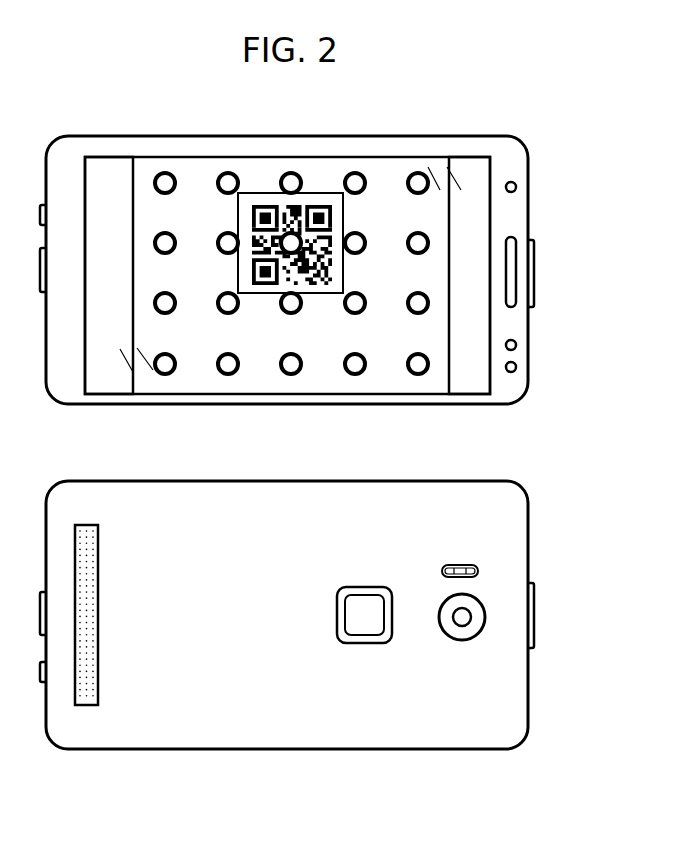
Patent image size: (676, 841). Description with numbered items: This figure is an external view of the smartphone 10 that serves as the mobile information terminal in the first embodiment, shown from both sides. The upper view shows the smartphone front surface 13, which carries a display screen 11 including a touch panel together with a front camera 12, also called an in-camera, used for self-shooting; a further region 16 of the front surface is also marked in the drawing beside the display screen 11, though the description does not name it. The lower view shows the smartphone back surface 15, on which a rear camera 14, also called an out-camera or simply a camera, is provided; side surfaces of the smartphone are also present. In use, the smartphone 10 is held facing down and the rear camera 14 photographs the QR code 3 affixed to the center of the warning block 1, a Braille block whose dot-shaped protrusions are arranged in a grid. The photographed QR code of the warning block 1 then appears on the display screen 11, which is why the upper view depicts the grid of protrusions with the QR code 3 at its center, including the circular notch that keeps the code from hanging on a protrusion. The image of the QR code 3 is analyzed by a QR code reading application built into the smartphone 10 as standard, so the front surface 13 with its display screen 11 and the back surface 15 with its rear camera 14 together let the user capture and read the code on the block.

The warning block 1 is at (382, 170).
The QR code 3 is at (320, 192).
The smartphone 10 is at (459, 104).
The display screen 11 is at (110, 156).
The front camera 12 is at (517, 182).
The smartphone front surface 13 is at (511, 155).
The rear camera 14 is at (440, 606).
The smartphone back surface 15 is at (518, 530).
The right non-display region 16 is at (447, 383).